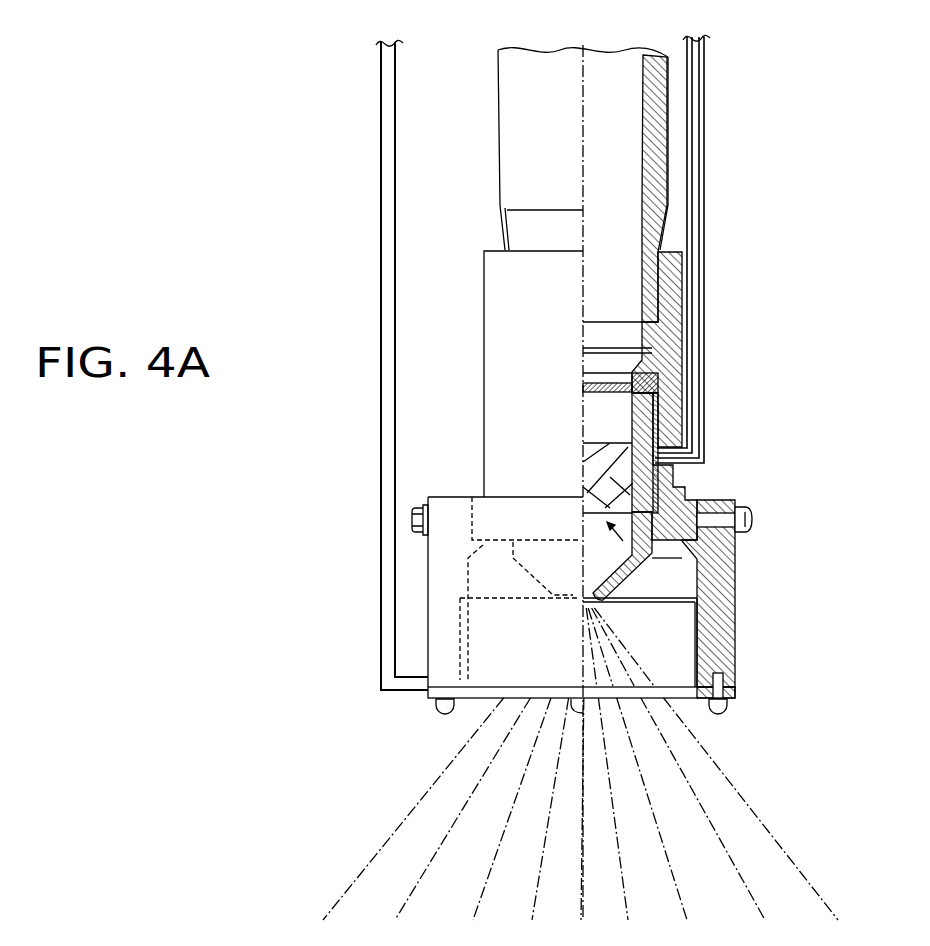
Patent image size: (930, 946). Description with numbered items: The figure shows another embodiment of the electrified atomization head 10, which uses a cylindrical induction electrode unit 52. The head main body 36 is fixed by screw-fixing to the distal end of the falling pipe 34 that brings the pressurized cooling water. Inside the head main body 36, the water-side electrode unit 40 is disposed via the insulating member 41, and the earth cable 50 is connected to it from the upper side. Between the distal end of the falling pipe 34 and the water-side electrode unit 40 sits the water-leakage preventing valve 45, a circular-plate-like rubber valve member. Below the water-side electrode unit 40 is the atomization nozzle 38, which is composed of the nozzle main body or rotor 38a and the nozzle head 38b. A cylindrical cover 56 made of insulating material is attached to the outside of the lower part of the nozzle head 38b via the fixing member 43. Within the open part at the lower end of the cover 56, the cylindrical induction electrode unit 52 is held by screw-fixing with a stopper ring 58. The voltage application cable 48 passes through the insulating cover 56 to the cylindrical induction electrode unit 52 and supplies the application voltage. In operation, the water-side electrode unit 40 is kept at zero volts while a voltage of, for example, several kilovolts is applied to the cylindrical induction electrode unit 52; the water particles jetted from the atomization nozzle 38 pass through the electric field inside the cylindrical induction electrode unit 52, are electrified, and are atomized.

The electrified atomization head 10 is at (345, 82).
The falling pipe 34 is at (538, 83).
The head main body 36 is at (500, 352).
The atomization nozzle 38 is at (684, 544).
The nozzle main body (rotor) 38a is at (682, 478).
The nozzle head 38b is at (730, 633).
The water-side electrode unit 40 is at (662, 401).
The insulating member 41 is at (658, 431).
The fixing member 43 is at (728, 540).
The water-leakage preventing valve 45 is at (660, 375).
The voltage application cable 48 is at (381, 221).
The earth cable 50 is at (706, 122).
The cylindrical induction electrode unit 52 is at (728, 674).
The cylindrical cover 56 is at (438, 596).
The stopper ring 58 is at (478, 693).